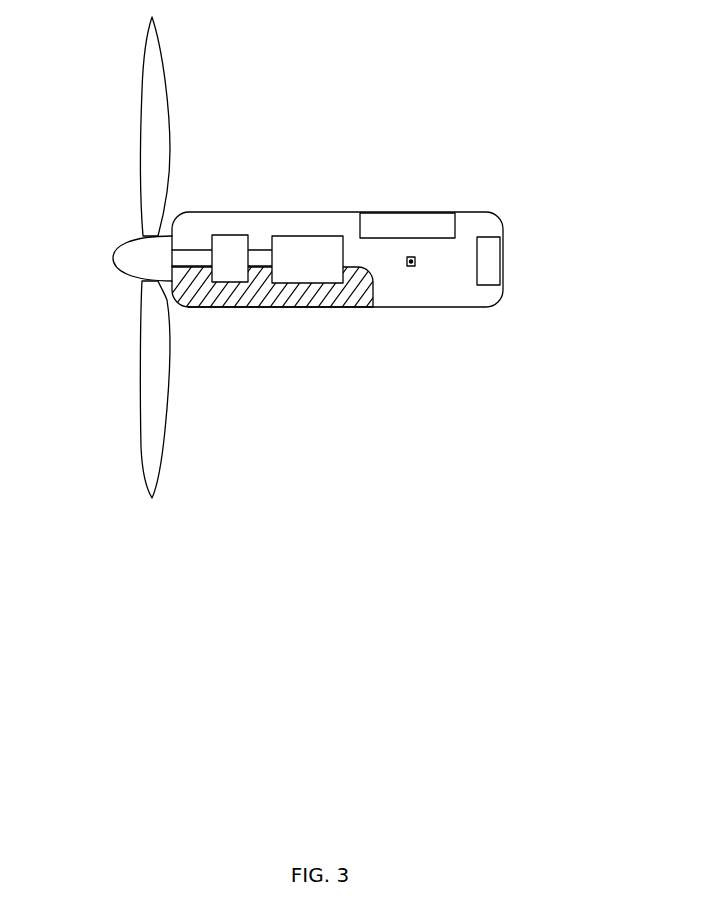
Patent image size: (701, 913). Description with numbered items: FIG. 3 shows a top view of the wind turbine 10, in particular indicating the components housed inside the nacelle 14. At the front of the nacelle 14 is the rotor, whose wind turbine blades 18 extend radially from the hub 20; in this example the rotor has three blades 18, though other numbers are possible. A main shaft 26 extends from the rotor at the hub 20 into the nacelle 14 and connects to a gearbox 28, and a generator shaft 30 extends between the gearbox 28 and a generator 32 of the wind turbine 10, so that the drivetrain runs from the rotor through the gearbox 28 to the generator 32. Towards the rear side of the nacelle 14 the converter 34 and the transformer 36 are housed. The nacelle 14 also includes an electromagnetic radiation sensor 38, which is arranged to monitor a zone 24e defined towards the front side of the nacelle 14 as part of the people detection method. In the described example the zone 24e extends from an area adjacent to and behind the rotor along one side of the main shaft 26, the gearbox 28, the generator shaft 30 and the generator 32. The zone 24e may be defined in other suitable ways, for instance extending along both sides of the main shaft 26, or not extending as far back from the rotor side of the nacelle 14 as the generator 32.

The wind turbine 10 is at (563, 114).
The nacelle 14 is at (458, 307).
The wind turbine blade 18 is at (152, 498).
The hub 20 is at (118, 245).
The zone 24e is at (202, 307).
The main shaft 26 is at (196, 245).
The gearbox 28 is at (238, 234).
The generator shaft 30 is at (258, 270).
The generator 32 is at (306, 236).
The converter 34 is at (392, 213).
The transformer 36 is at (503, 255).
The electromagnetic radiation sensor 38 is at (409, 267).